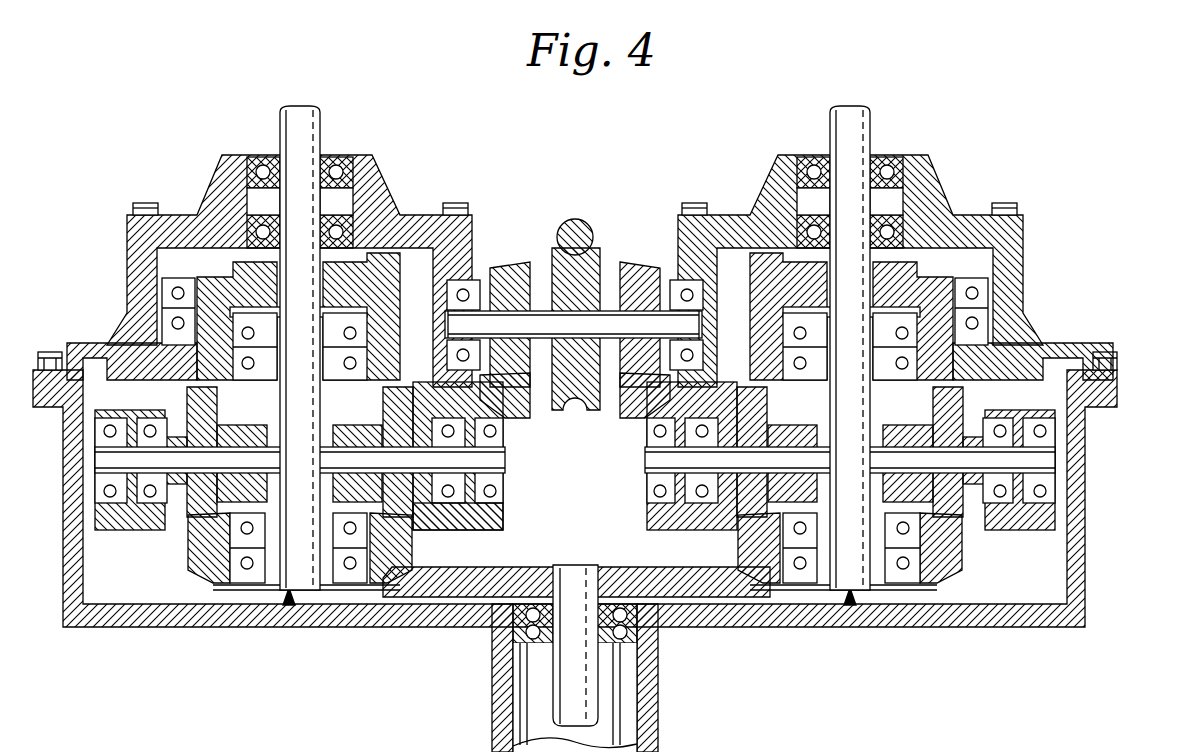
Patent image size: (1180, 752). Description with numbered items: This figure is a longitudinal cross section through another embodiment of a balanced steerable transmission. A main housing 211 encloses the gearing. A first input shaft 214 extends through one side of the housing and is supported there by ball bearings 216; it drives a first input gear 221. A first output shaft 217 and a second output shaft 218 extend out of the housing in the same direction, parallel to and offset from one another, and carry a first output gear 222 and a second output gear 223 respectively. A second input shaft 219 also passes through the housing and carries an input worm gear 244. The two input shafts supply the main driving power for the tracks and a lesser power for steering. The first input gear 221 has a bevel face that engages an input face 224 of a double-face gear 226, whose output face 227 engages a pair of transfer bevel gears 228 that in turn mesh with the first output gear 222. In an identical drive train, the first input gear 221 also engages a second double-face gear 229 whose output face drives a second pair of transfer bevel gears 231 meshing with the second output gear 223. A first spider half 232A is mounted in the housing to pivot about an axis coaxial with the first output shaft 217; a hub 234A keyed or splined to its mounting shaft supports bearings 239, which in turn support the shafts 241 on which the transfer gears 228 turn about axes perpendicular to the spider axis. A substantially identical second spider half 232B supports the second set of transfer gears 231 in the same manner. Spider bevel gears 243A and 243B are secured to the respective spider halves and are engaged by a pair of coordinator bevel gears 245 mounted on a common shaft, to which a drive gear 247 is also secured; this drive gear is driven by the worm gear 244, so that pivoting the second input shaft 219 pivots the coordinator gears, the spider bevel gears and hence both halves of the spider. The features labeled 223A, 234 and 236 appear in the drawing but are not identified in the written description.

The main housing 211 is at (1070, 490).
The first input shaft 214 is at (570, 685).
The ball bearings 216 is at (627, 630).
The first output shaft 217 is at (305, 137).
The second output shaft 218 is at (857, 132).
The second input shaft 219 is at (640, 263).
The first input gear 221 is at (467, 580).
The first output gear 222 is at (403, 240).
The second output gear 223 is at (940, 270).
The gear carrier bottom plate 223A is at (287, 560).
The input face 224 is at (392, 577).
The double-face gear 226 is at (190, 557).
The output face 227 is at (177, 530).
The transfer bevel gears 228 is at (220, 427).
The second double-face gear 229 is at (940, 570).
The second pair of transfer bevel gears 231 is at (747, 520).
The first spider half 232A is at (290, 560).
The second spider half 232B is at (847, 590).
The mounting bracket 234 is at (100, 357).
The hub 234A is at (507, 522).
The mounting bracket 236 is at (1043, 405).
The bearings 239 is at (107, 433).
The shafts 241 is at (100, 465).
The spider bevel gear 243A is at (517, 400).
The spider bevel gear 243B is at (643, 400).
The input worm gear 244 is at (630, 165).
The coordinator bevel gears 245 is at (680, 195).
The drive gear 247 is at (553, 263).